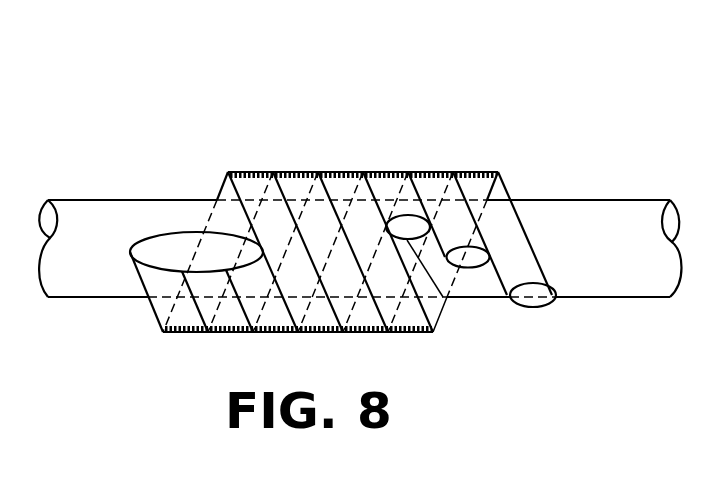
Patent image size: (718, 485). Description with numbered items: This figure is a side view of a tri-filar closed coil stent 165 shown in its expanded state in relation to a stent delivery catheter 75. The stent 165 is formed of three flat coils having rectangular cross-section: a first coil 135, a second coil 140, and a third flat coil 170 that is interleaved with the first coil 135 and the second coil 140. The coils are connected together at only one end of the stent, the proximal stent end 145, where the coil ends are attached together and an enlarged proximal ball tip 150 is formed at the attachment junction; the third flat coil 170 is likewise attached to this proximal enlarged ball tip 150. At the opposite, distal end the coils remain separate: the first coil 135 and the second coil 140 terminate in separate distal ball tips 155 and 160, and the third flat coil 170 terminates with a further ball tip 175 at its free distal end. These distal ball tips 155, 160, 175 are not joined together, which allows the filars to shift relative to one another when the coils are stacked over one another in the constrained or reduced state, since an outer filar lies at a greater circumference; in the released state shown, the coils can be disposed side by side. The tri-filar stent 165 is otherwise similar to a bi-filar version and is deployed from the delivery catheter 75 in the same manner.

The stent delivery catheter 75 is at (117, 225).
The first coil 135 is at (478, 171).
The second coil 140 is at (522, 255).
The proximal stent end 145 is at (152, 312).
The proximal enlarged ball tip 150 is at (167, 250).
The distal ball tip 155 is at (450, 266).
The distal ball tip 160 is at (548, 303).
The tri-filar closed coil stent 165 is at (388, 142).
The third flat coil 170 is at (413, 171).
The further ball tip 175 is at (443, 297).